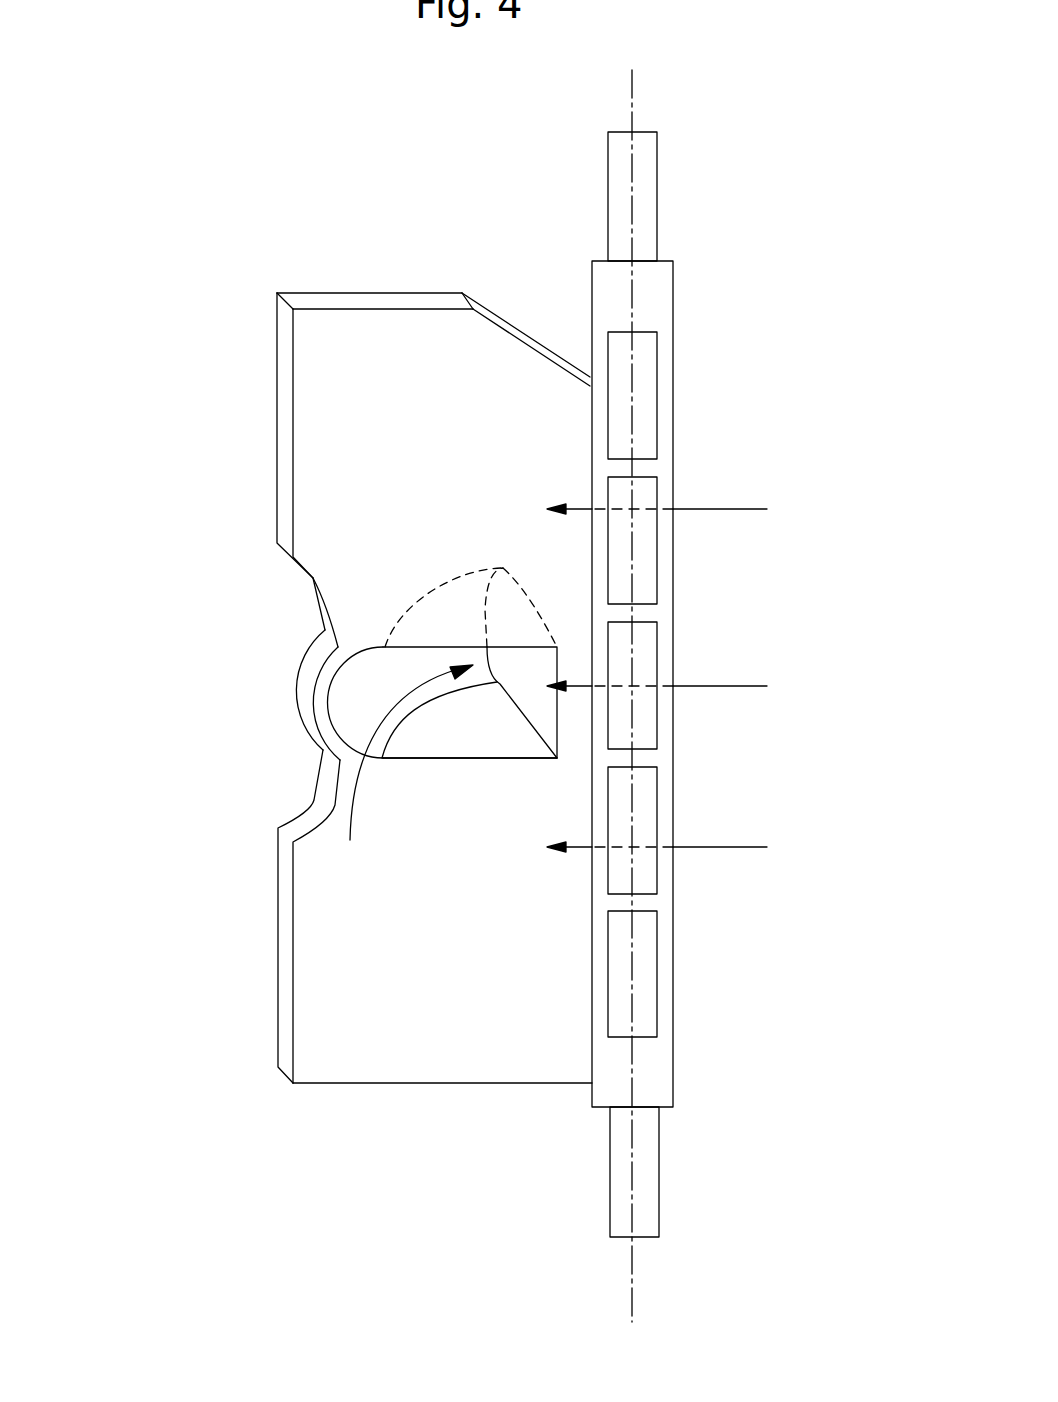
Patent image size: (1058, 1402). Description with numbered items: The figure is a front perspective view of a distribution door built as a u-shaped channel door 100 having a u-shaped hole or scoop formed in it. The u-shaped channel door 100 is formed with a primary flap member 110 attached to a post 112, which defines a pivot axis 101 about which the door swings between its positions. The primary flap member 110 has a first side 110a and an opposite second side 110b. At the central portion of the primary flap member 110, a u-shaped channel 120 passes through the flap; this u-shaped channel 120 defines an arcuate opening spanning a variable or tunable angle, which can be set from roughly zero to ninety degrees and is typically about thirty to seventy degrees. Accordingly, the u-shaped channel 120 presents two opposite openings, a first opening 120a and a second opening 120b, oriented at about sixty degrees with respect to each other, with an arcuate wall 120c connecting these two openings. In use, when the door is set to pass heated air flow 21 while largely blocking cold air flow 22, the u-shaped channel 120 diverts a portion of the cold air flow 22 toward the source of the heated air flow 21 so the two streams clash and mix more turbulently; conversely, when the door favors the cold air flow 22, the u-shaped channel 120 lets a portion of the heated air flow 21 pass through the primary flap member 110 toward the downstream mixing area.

The u-shaped channel door 100 is at (336, 653).
The pivot axis 101 is at (632, 91).
The primary flap member 110 is at (392, 653).
The first side 110a is at (318, 293).
The second side 110b is at (420, 309).
The post 112 is at (648, 171).
The u-shaped channel 120 is at (399, 671).
The first opening 120a is at (537, 613).
The second opening 120b is at (503, 758).
The arcuate wall 120c is at (438, 582).
The heated air flow 21 is at (742, 686).
The cold air flow 22 is at (355, 805).